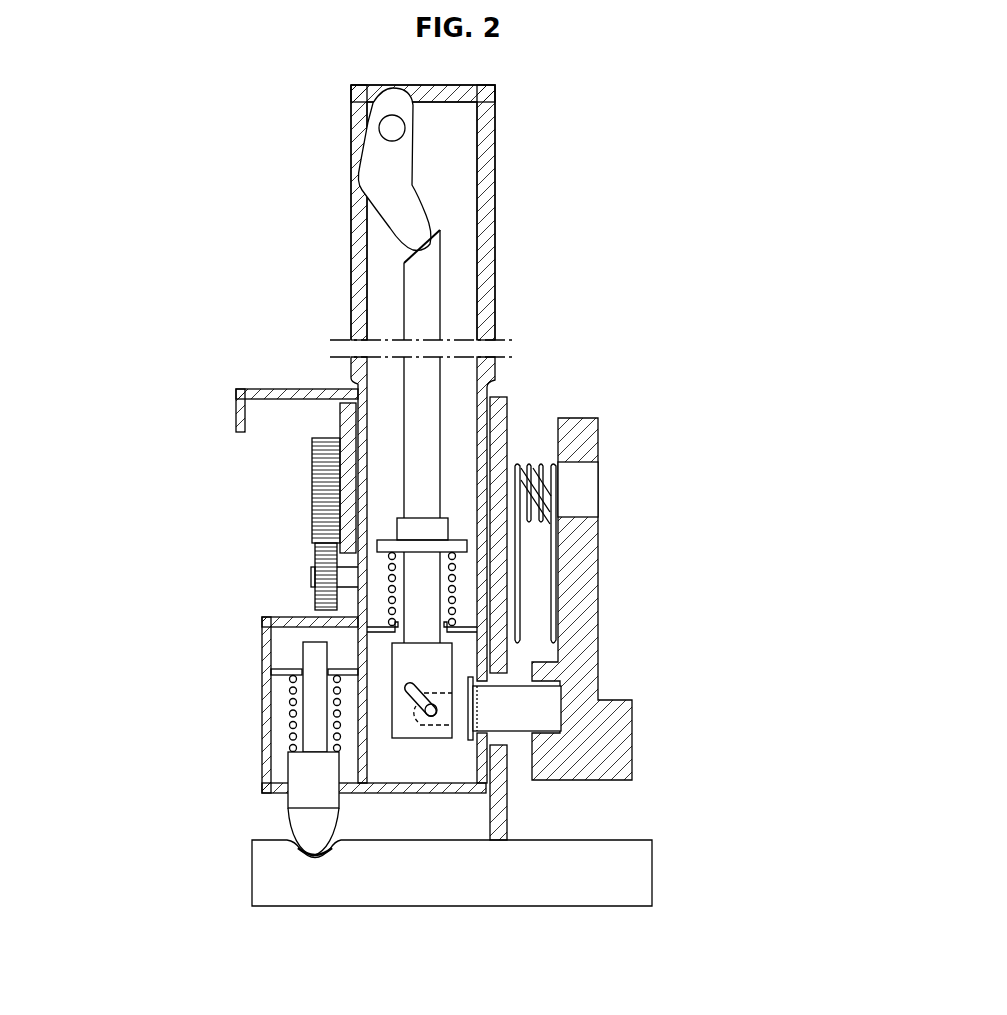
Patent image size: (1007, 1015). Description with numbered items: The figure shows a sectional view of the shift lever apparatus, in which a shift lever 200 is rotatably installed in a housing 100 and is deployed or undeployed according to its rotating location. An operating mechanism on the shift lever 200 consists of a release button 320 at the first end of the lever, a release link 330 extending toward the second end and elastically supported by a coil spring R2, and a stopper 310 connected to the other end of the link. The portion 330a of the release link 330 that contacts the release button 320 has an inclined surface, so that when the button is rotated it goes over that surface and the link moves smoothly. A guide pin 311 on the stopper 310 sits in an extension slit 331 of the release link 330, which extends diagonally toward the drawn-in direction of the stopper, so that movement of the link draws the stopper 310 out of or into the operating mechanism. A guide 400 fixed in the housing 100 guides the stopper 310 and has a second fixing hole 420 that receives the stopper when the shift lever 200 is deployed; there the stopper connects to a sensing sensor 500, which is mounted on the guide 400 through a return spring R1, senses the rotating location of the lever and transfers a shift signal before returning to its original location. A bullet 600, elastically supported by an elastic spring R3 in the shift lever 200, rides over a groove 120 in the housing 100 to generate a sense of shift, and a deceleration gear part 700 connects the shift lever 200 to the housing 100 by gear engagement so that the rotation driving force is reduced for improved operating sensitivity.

The housing 100 is at (238, 877).
The groove 120 is at (315, 857).
The shift lever 200 is at (512, 144).
The stopper 310 is at (545, 700).
The guide pin 311 is at (433, 722).
The release button 320 is at (378, 168).
The release link 330 is at (422, 392).
The inclined surface portion of release link 330a is at (394, 245).
The extension slit 331 is at (408, 684).
The guide 400 is at (517, 404).
The second fixing hole 420 is at (498, 745).
The sensing sensor 500 is at (582, 560).
The bullet 600 is at (305, 767).
The deceleration gear part 700 is at (310, 563).
The return spring R1 is at (540, 484).
The coil spring R2 is at (456, 600).
The elastic spring R3 is at (293, 713).